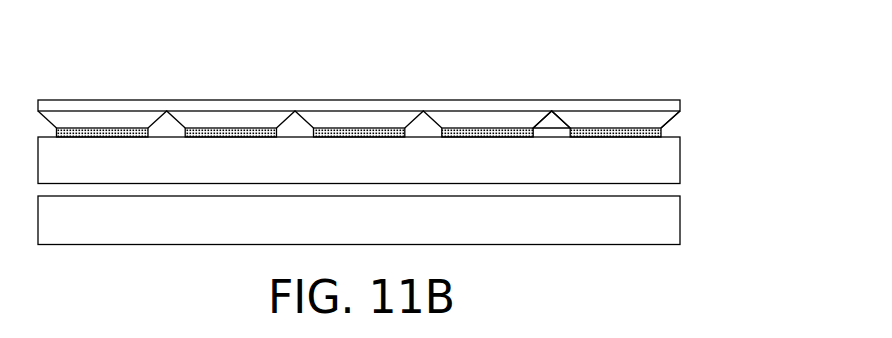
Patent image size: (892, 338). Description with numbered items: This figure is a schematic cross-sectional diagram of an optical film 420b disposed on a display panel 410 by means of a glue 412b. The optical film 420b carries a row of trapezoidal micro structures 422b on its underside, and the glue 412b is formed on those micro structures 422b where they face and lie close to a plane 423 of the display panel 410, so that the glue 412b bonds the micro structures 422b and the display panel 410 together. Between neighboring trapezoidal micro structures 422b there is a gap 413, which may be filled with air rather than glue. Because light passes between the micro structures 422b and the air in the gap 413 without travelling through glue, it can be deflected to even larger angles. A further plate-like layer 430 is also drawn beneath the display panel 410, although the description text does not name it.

The display panel 410 is at (663, 163).
The glue 412b is at (662, 129).
The gap 413 is at (557, 132).
The optical film 420b is at (672, 107).
The micro structures 422b is at (620, 118).
The plane 423 is at (662, 133).
The lower substrate 430 is at (663, 222).